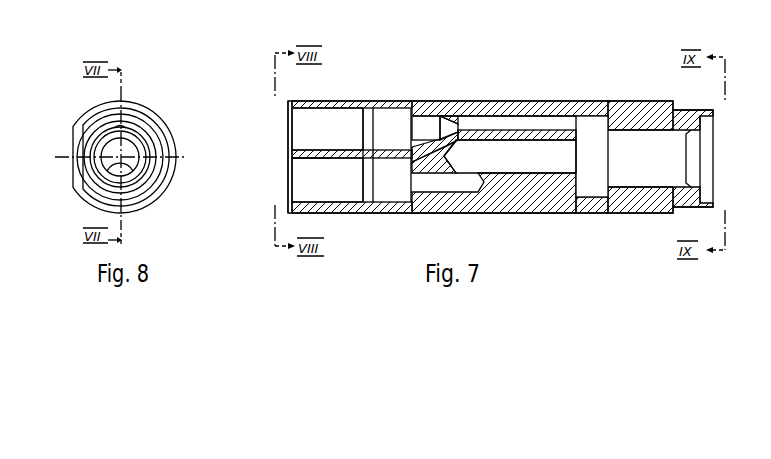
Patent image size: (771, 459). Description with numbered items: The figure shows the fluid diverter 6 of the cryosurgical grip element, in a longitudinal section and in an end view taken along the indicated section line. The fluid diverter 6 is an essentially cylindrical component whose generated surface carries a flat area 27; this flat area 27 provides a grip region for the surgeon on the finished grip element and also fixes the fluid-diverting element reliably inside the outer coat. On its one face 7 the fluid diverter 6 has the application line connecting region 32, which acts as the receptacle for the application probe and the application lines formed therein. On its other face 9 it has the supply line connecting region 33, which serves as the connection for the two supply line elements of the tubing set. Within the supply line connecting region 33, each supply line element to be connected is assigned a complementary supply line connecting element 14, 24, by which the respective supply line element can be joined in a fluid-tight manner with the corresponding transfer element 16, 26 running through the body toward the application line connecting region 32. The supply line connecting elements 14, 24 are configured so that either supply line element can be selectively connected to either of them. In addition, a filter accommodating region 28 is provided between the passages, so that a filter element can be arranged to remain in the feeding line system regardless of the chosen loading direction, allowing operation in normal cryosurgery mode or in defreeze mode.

In FIG. 8, the fluid diverter 6 is at (160, 97).
In FIG. 7, the fluid diverter 6 is at (484, 83).
In FIG. 8, the face 7 is at (159, 131).
In FIG. 7, the face 7 is at (722, 139).
In FIG. 7, the other face 9 is at (283, 136).
In FIG. 7, the supply line connecting element 14 is at (343, 118).
In FIG. 7, the transfer element 16 is at (528, 168).
In FIG. 7, the supply line connecting element 24 is at (351, 190).
In FIG. 7, the transfer element 26 is at (529, 118).
In FIG. 8, the flat area 27 is at (72, 143).
In FIG. 7, the filter accommodating region 28 is at (458, 128).
In FIG. 8, the application line connecting region 32 is at (151, 155).
In FIG. 7, the application line connecting region 32 is at (688, 168).
In FIG. 7, the supply line connecting region 33 is at (303, 167).